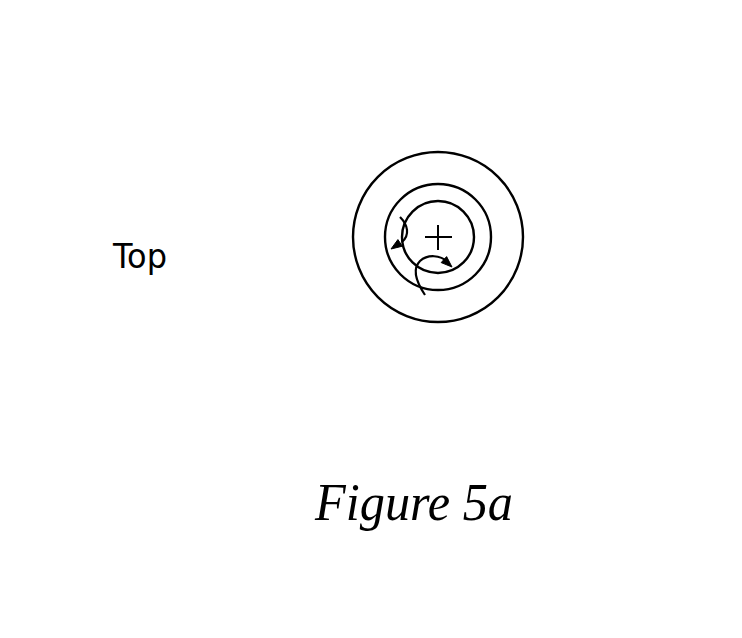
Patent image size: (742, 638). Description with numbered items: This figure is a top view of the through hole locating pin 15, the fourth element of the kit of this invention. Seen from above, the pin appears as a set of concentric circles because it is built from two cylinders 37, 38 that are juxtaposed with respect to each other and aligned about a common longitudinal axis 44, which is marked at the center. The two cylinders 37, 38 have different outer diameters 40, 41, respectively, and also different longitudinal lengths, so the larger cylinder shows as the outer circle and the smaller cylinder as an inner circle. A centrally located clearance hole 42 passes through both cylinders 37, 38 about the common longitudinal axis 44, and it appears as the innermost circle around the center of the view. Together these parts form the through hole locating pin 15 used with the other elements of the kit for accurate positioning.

The through hole locating pin 15 is at (648, 177).
The cylinder 37 is at (478, 213).
The cylinder 38 is at (447, 170).
The outer diameter 40 is at (400, 217).
The outer diameter 41 is at (533, 257).
The clearance hole 42 is at (425, 295).
The common longitudinal axis 44 is at (428, 233).